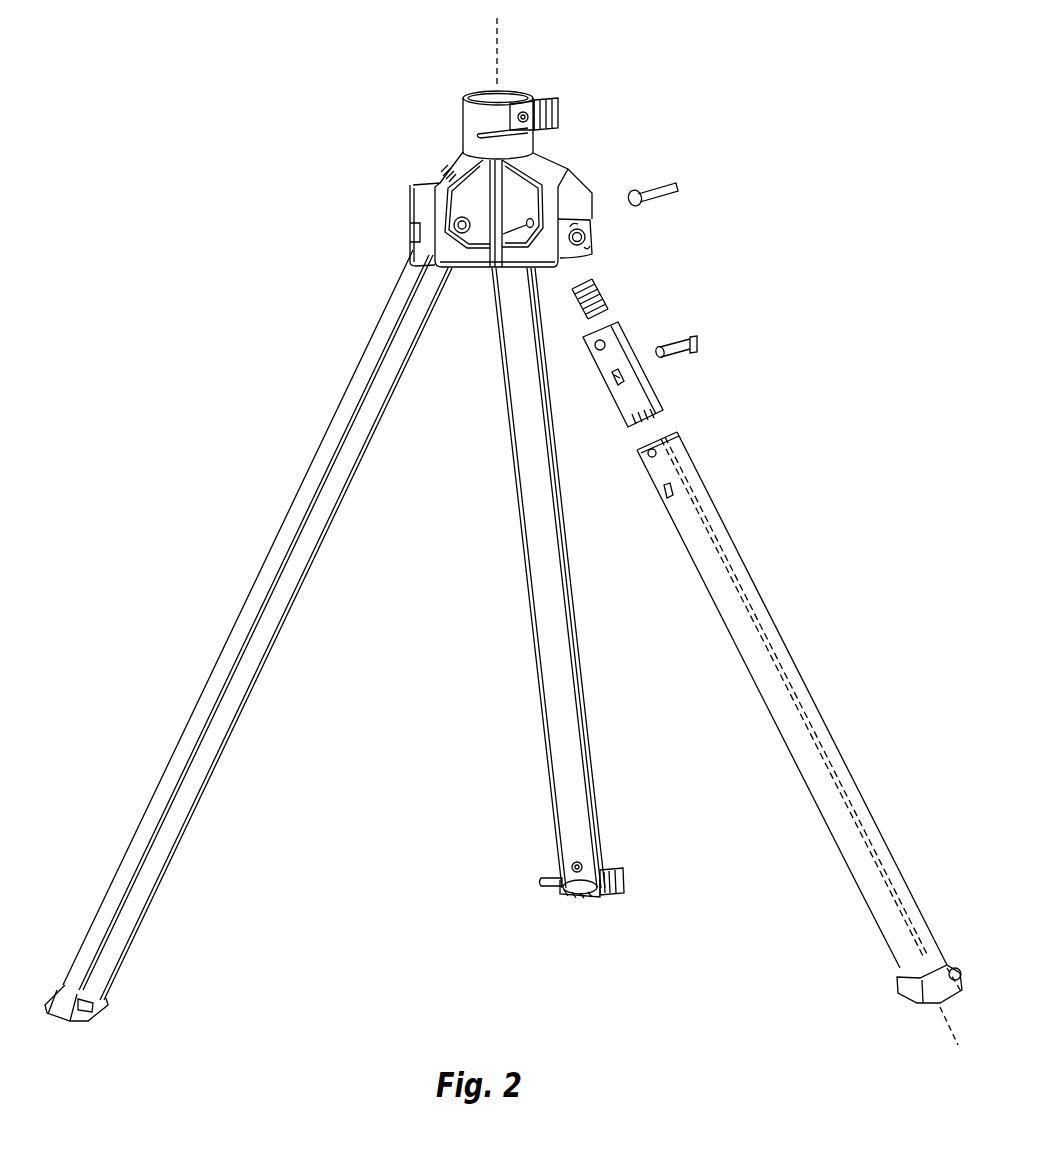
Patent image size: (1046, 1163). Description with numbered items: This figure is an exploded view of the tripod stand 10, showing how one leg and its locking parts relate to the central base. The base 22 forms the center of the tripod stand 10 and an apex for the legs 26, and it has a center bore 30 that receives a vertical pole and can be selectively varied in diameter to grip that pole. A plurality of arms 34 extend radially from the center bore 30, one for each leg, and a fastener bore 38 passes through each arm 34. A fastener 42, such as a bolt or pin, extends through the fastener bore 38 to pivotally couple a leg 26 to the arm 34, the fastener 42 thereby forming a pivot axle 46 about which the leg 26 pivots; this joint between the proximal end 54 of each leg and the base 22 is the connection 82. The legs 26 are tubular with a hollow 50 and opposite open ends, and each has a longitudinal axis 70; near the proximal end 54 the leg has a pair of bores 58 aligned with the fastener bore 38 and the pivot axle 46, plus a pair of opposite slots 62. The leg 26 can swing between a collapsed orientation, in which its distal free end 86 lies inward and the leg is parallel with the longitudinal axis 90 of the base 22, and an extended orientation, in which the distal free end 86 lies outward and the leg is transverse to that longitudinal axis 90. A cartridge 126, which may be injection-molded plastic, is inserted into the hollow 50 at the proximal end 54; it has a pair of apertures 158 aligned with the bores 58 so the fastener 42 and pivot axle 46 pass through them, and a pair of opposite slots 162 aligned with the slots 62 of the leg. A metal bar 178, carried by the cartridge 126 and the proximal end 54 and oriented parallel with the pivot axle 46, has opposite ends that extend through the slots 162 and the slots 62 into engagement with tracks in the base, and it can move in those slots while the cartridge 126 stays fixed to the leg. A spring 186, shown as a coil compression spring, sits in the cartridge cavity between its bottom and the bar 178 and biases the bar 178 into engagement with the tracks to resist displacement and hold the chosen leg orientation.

The tripod stand 10 is at (270, 527).
The base 22 is at (455, 163).
The legs 26 is at (757, 627).
The center bore 30 is at (478, 86).
The arms 34 is at (565, 167).
The fastener bore 38 is at (492, 270).
The fastener 42 is at (655, 196).
The pivot axle 46 is at (445, 183).
The hollow 50 is at (808, 702).
The proximal end 54 is at (706, 512).
The bores 58 is at (660, 452).
The opposite slots 62 is at (664, 493).
The longitudinal axis 70 is at (945, 1018).
The connection 82 is at (396, 242).
The distal free end 86 is at (885, 934).
The longitudinal axis 90 is at (502, 54).
The cartridge 126 is at (685, 345).
The apertures 158 is at (605, 325).
The opposite slots 162 is at (610, 378).
The bar 178 is at (694, 348).
The spring 186 is at (592, 283).